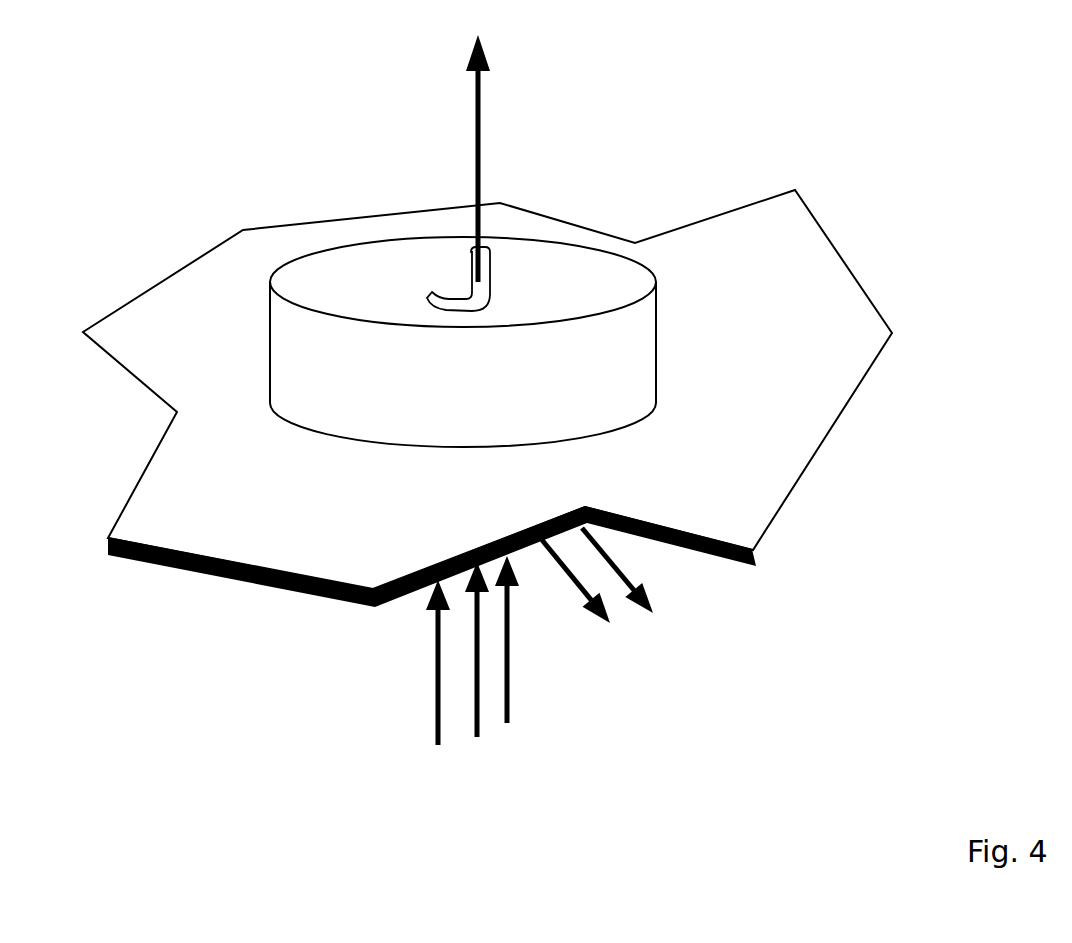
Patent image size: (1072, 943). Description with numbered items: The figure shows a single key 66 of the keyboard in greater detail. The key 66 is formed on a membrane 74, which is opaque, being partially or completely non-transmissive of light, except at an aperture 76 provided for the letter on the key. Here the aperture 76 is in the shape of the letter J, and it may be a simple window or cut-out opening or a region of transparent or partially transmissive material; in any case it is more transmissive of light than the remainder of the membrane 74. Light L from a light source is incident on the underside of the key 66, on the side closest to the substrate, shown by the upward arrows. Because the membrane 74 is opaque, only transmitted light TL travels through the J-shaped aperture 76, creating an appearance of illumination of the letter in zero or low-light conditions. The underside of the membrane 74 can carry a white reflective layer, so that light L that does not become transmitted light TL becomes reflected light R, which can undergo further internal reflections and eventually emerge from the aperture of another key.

The membrane 74 is at (225, 608).
The key 66 is at (583, 405).
The aperture 76 is at (512, 283).
The transmitted light TL is at (430, 114).
The light L is at (399, 686).
The reflected light R is at (679, 617).